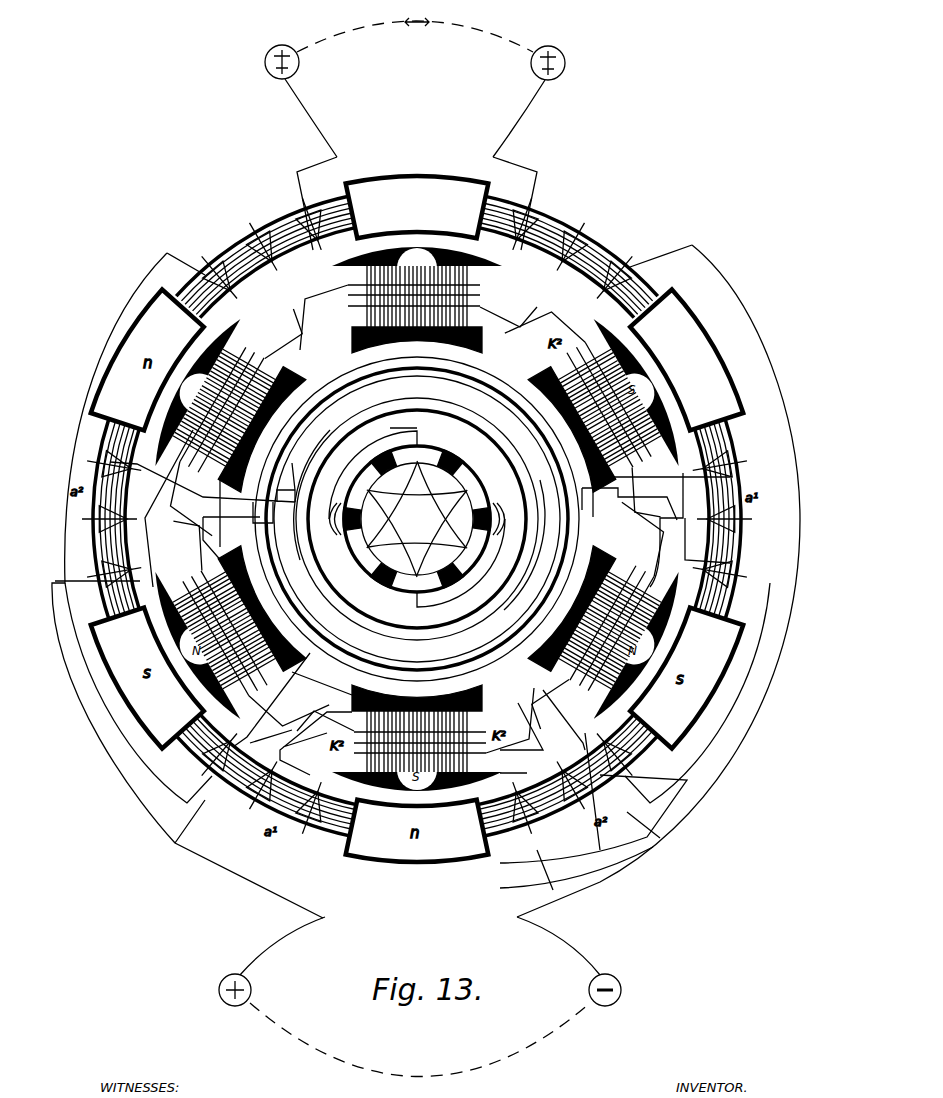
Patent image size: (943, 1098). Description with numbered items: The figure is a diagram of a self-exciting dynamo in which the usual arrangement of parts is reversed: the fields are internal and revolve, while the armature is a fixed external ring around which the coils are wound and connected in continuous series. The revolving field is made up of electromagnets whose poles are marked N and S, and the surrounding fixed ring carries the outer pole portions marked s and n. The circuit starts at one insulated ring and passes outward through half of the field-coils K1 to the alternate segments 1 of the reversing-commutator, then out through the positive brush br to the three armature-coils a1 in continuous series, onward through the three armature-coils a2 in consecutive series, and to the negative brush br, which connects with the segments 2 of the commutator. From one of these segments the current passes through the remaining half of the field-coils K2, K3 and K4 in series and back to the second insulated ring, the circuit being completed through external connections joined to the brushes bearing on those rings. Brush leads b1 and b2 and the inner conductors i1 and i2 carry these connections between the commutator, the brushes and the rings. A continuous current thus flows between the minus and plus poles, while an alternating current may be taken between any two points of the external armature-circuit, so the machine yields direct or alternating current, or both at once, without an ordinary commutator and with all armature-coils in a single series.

The south field-magnet pole piece s is at (417, 207).
The north field-magnet pole piece n is at (686, 363).
The north pole of electromagnet N is at (415, 260).
The south pole of electromagnet S is at (197, 390).
The field-coil K1 is at (418, 397).
The field-coil K2 is at (312, 457).
The field-coil K3 is at (310, 579).
The electromagnet coil K4 is at (521, 581).
The armature-coil a1 is at (270, 254).
The armature-coil a2 is at (568, 257).
The brush br is at (414, 522).
The brush lead b1 is at (426, 520).
The brush lead b2 is at (369, 633).
The internal conductor i1 is at (308, 521).
The internal conductor i2 is at (494, 580).
The commutator segment 1 is at (438, 540).
The commutator segment 2 is at (390, 500).